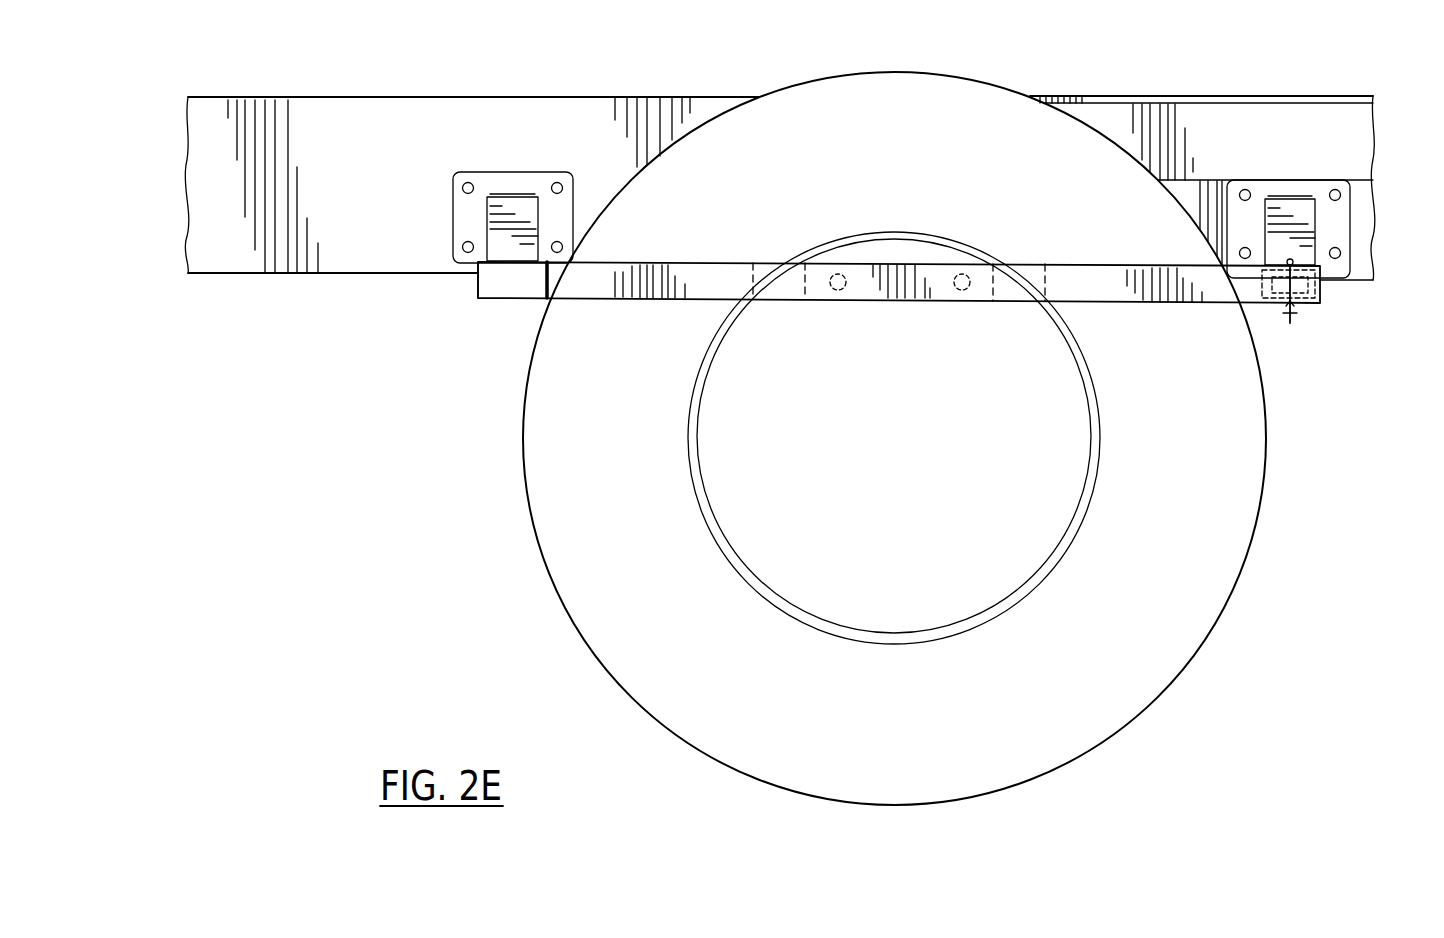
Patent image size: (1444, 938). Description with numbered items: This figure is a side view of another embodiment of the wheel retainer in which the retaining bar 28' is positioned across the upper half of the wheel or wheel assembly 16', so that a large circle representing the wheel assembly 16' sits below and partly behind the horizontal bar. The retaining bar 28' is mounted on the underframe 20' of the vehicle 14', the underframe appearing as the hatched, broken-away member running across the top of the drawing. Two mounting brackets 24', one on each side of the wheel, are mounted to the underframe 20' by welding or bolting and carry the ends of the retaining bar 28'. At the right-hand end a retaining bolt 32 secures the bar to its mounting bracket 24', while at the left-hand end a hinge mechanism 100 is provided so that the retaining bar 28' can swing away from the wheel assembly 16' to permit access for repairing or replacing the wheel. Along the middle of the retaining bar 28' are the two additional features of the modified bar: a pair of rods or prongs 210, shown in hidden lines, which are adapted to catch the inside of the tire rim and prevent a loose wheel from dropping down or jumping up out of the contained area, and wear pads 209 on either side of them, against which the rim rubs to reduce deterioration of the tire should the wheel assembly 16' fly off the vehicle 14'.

The vehicle 14' is at (780, 146).
The underframe 20' is at (780, 296).
The wheel assembly 16' is at (864, 438).
The mounting bracket 24' is at (908, 225).
The retaining bar 28' is at (899, 316).
The retaining bolt 32 is at (1297, 310).
The hinge mechanism 100 is at (505, 305).
The wear pads 209 is at (778, 290).
The rods or prongs 210 is at (962, 288).